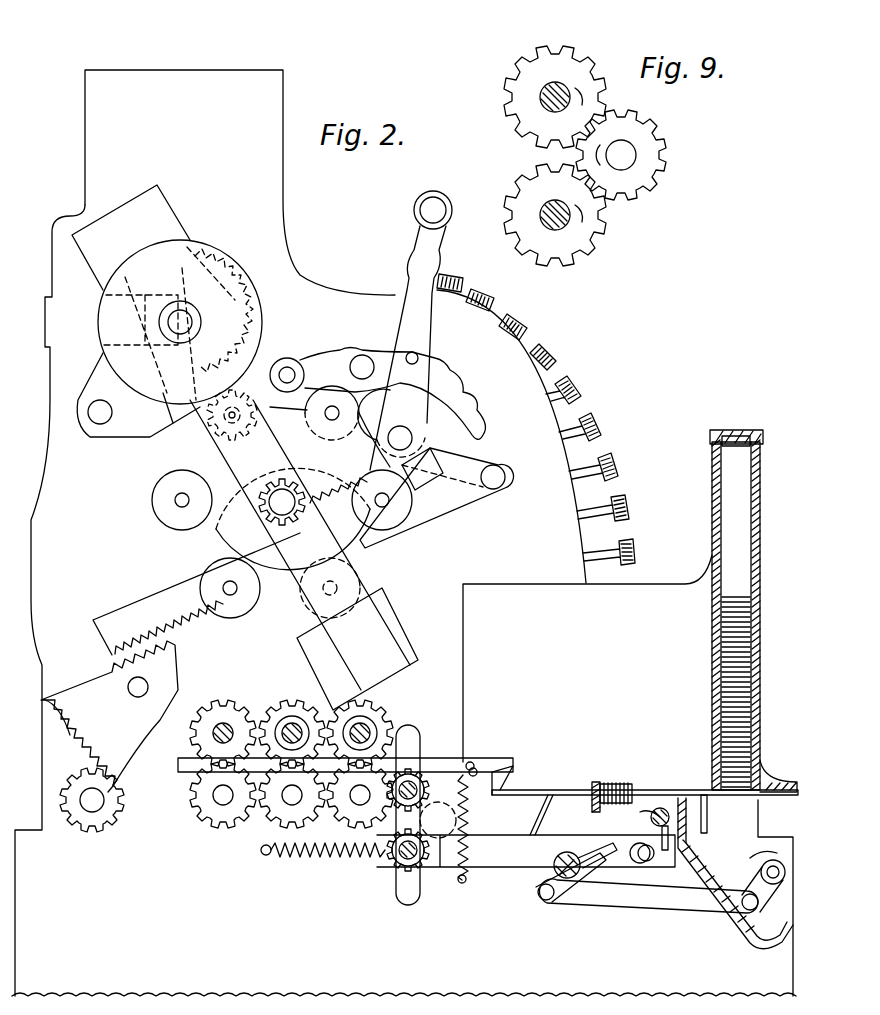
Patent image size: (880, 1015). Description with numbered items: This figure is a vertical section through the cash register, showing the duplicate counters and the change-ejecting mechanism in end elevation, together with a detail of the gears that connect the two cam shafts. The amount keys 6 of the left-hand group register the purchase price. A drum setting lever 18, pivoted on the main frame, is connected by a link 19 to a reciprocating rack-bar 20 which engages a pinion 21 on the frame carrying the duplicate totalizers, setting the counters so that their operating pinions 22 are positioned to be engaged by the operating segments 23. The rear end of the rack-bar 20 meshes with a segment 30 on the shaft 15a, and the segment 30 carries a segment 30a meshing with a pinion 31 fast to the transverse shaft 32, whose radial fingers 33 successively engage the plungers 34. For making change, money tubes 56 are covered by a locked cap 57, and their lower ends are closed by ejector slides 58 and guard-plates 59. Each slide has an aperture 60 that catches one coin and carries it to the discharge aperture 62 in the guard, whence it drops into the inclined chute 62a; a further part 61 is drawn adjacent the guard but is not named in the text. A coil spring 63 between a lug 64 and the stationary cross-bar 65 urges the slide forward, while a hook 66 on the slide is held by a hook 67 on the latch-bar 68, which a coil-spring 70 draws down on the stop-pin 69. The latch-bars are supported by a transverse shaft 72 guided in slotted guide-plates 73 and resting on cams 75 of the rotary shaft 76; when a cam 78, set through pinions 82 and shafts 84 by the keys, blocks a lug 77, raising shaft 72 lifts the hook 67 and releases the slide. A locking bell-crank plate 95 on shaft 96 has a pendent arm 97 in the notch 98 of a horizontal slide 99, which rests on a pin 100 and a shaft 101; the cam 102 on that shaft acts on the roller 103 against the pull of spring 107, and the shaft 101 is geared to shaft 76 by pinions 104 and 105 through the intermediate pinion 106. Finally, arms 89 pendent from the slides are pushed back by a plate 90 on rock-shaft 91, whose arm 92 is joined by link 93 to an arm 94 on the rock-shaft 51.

In FIG. 2, the amount keys 6 is at (563, 353).
In FIG. 2, the shaft 15a is at (128, 683).
In FIG. 2, the drum setting lever 18 is at (428, 250).
In FIG. 2, the link 19 is at (405, 520).
In FIG. 2, the rack-bar 20 is at (125, 610).
In FIG. 2, the pinion 21 is at (262, 513).
In FIG. 2, the operating pinions 22 is at (236, 432).
In FIG. 2, the operating segments 23 is at (242, 302).
In FIG. 2, the segment 30 is at (172, 690).
In FIG. 2, the segment 30a is at (69, 717).
In FIG. 2, the pinion 31 is at (120, 800).
In FIG. 2, the transverse shaft 32 is at (90, 812).
In FIG. 2, the radial fingers or pins 33 is at (200, 800).
In FIG. 2, the plungers 34 is at (196, 795).
In FIG. 2, the rock-shaft 51 is at (763, 870).
In FIG. 2, the money tubes 56 is at (740, 552).
In FIG. 2, the cap or protector 57 is at (736, 432).
In FIG. 2, the ejector slides 58 is at (660, 793).
In FIG. 2, the guard-plates 59 is at (707, 793).
In FIG. 2, the aperture 60 is at (762, 782).
In FIG. 2, the bracket bend 61 is at (686, 843).
In FIG. 2, the discharge aperture 62 is at (750, 800).
In FIG. 2, the inclined chute 62a is at (750, 927).
In FIG. 2, the coil spring 63 is at (613, 780).
In FIG. 2, the lug 64 is at (633, 790).
In FIG. 2, the cross-bar 65 is at (595, 790).
In FIG. 2, the hook 66 is at (493, 787).
In FIG. 2, the hook 67 is at (507, 780).
In FIG. 2, the latch-bar 68 is at (420, 765).
In FIG. 2, the stop-pin 69 is at (473, 766).
In FIG. 2, the coil-spring 70 is at (470, 800).
In FIG. 2, the transverse shaft 72 is at (410, 753).
In FIG. 2, the slotted guide-plates 73 is at (407, 897).
In FIG. 2, the cams 75 is at (440, 770).
In FIG. 2, the transverse rotary shaft 76 is at (392, 803).
In FIG. 9, the transverse rotary shaft 76 is at (545, 97).
In FIG. 2, the lug 77 is at (290, 767).
In FIG. 2, the cams 78 is at (290, 727).
In FIG. 2, the pinions 82 is at (227, 713).
In FIG. 2, the transverse shafts 84 is at (220, 797).
In FIG. 2, the arms 89 is at (560, 815).
In FIG. 2, the plate 90 is at (602, 860).
In FIG. 2, the rock-shaft 91 is at (572, 880).
In FIG. 2, the arm 92 is at (550, 887).
In FIG. 2, the link 93 is at (678, 898).
In FIG. 2, the arm 94 is at (765, 890).
In FIG. 2, the locking bell-crank plate 95 is at (653, 813).
In FIG. 2, the transverse shaft 96 is at (662, 812).
In FIG. 2, the pendent arm 97 is at (680, 850).
In FIG. 2, the notch 98 is at (665, 850).
In FIG. 2, the horizontal slide 99 is at (526, 851).
In FIG. 2, the pin 100 is at (635, 862).
In FIG. 2, the shaft 101 is at (400, 867).
In FIG. 9, the shaft 101 is at (545, 213).
In FIG. 2, the cam 102 is at (420, 870).
In FIG. 2, the roller 103 is at (440, 860).
In FIG. 9, the pinion 104 is at (590, 225).
In FIG. 9, the pinion 105 is at (581, 60).
In FIG. 9, the intermediate pinion 106 is at (655, 157).
In FIG. 2, the coil spring 107 is at (300, 860).